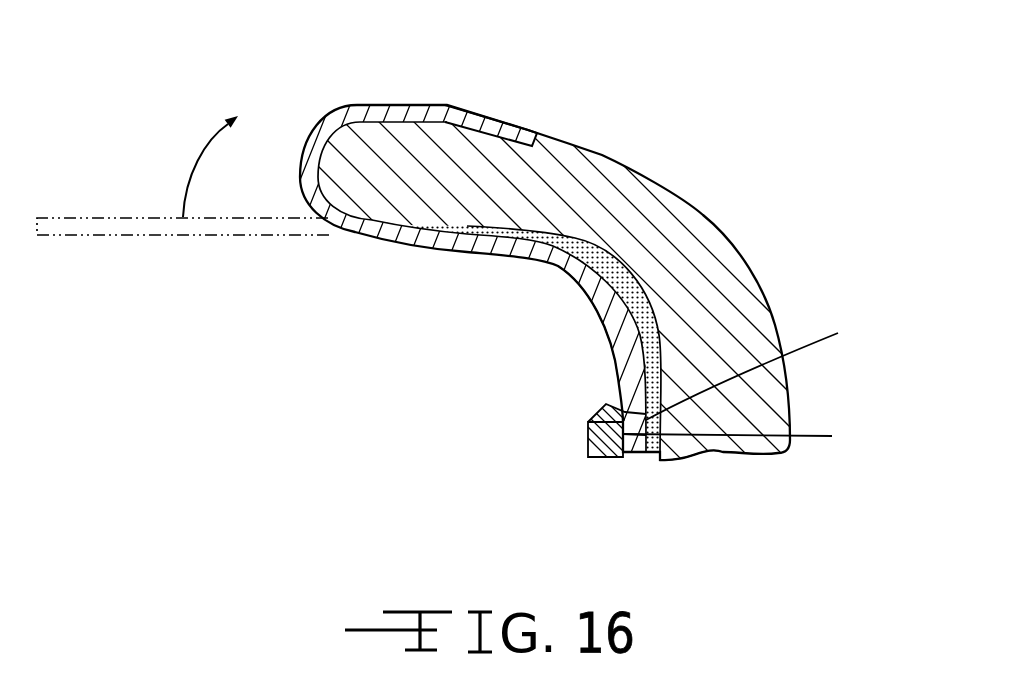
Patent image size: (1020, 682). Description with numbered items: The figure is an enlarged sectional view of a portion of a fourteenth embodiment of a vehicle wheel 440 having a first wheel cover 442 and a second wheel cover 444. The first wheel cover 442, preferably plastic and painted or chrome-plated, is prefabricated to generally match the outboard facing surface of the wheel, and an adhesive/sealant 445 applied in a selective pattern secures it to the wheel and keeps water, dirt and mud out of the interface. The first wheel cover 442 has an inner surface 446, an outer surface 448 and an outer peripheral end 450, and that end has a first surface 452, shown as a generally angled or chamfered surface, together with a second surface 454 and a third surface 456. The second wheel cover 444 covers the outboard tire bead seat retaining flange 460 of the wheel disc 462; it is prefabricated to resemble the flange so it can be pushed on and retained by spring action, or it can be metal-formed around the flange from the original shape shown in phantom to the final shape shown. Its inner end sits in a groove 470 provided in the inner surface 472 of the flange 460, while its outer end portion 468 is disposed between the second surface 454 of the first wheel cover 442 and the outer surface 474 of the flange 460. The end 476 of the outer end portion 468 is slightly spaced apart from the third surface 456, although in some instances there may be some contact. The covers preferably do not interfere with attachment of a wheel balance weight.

The vehicle wheel 440 is at (450, 389).
The first wheel cover 442 is at (580, 468).
The second wheel cover 444 is at (350, 247).
The adhesive/sealant 445 is at (468, 242).
The inner surface 446 is at (740, 458).
The outer surface 448 is at (588, 438).
The outer peripheral end 450 is at (600, 397).
The first surface 452 is at (592, 412).
The second surface 454 is at (769, 367).
The third surface 456 is at (751, 437).
The outboard tire bead seat retaining flange 460 is at (699, 241).
The wheel disc 462 is at (792, 288).
The outer end portion 468 is at (83, 237).
The groove 470 is at (497, 131).
The inner surface 472 is at (806, 399).
The outer surface 474 is at (616, 352).
The end 476 is at (617, 449).